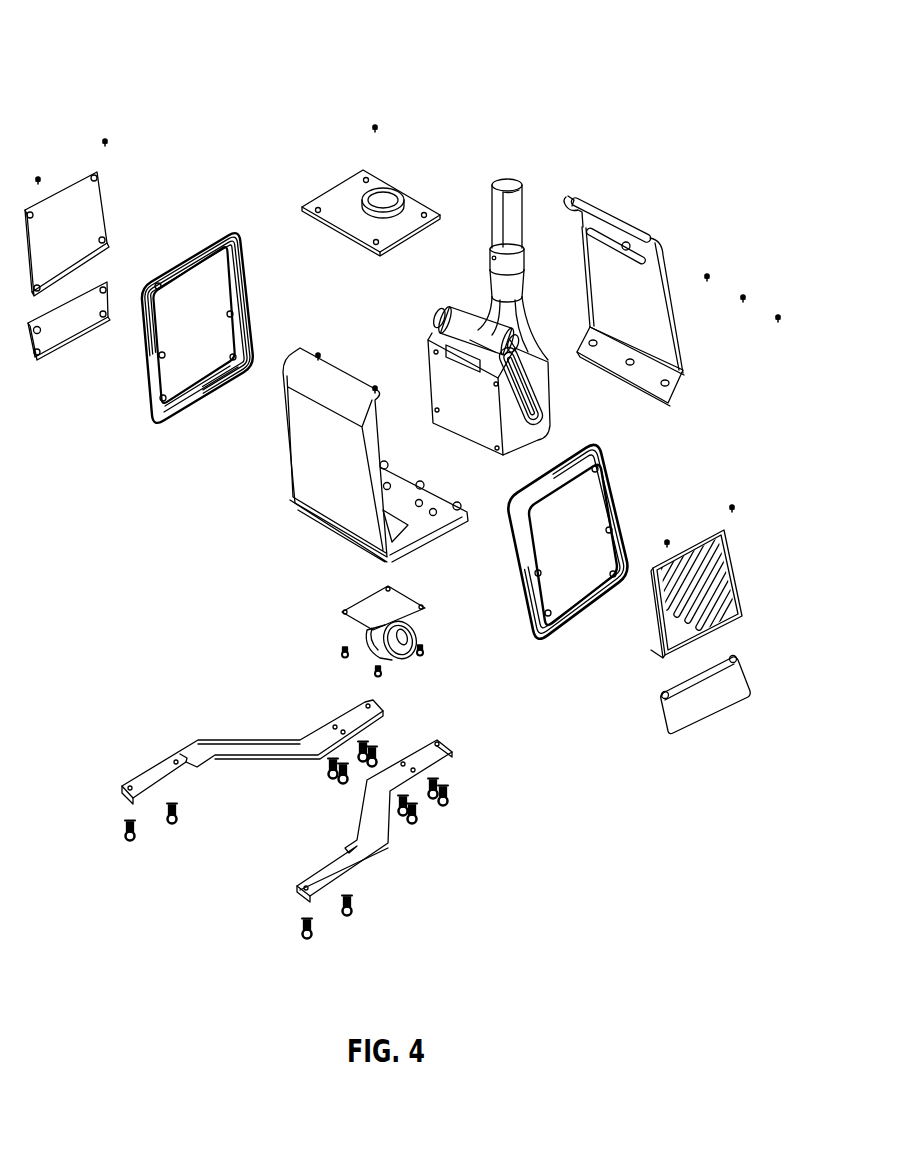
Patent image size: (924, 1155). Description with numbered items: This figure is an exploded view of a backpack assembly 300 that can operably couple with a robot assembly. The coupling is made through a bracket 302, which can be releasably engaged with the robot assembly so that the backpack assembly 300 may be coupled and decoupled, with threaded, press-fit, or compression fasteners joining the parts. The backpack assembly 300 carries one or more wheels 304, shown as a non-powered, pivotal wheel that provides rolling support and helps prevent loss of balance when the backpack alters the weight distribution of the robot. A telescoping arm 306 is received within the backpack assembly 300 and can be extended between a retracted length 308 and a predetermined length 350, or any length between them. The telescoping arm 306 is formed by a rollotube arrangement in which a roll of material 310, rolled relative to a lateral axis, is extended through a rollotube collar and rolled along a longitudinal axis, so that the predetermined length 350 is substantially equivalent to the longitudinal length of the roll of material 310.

The backpack assembly 300 is at (108, 37).
The bracket 302 is at (140, 752).
The wheels 304 is at (348, 637).
The telescoping arm 306 is at (519, 166).
The retracted length 308 is at (485, 197).
The roll of material 310 is at (547, 378).
The predetermined length 350 is at (532, 250).